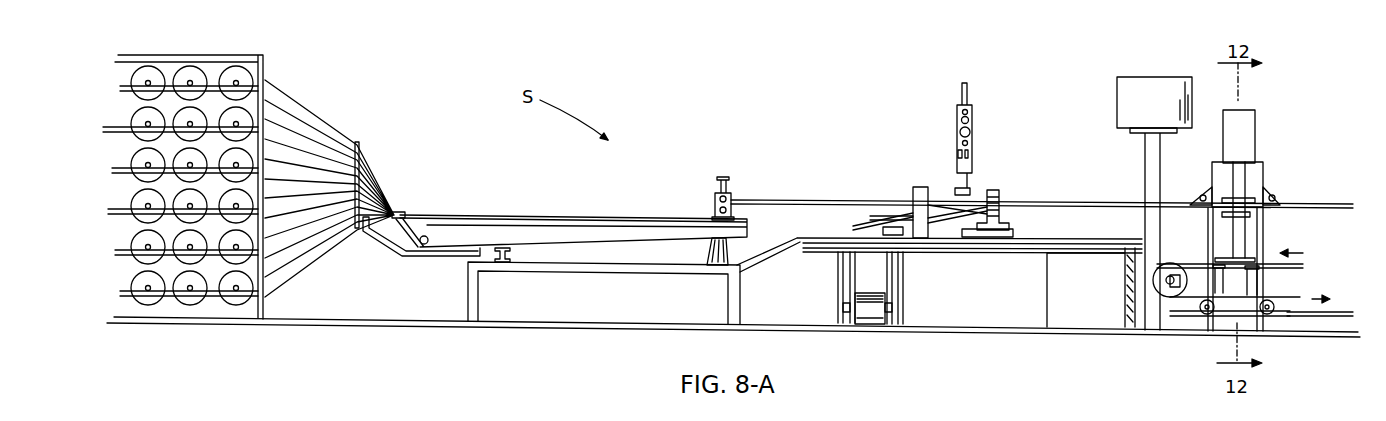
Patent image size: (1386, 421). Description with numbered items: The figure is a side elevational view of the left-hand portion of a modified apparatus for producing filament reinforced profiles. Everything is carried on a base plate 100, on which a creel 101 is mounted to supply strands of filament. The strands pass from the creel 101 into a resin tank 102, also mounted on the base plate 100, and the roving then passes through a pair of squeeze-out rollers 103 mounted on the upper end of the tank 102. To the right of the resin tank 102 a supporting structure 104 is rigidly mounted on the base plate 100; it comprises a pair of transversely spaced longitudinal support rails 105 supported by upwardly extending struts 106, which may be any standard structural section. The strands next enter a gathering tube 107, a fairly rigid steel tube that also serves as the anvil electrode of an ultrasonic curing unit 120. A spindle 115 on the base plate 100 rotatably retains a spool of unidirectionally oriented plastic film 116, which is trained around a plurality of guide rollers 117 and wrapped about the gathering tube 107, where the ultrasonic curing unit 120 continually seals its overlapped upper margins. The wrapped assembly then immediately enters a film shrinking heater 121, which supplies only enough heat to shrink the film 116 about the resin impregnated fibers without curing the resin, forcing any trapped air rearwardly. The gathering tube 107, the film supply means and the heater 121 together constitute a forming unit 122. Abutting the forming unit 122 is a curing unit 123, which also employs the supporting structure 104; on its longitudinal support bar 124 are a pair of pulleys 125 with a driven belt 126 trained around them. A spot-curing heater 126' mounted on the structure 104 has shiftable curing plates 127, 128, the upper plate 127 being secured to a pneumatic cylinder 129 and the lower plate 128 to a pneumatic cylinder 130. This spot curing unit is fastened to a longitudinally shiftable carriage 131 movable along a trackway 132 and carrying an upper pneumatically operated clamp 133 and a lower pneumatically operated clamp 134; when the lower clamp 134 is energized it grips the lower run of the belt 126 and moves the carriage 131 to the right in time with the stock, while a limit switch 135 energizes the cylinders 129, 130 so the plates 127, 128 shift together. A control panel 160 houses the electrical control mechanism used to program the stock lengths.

The base plate 100 is at (640, 326).
The creel 101 is at (254, 80).
The resin tank 102 is at (553, 216).
The squeeze-out rollers 103 is at (731, 195).
The supporting structure 104 is at (924, 253).
The longitudinal support rails 105 is at (1047, 252).
The struts 106 is at (741, 301).
The gathering tube 107 is at (940, 193).
The spindle 115 is at (891, 305).
The plastic film 116 is at (872, 325).
The guide rollers 117 is at (853, 217).
The ultrasonic curing unit 120 is at (972, 131).
The film shrinking heater 121 is at (1000, 193).
The forming unit 122 is at (887, 187).
The curing unit 123 is at (1272, 160).
The longitudinal support bar 124 is at (1150, 282).
The pulleys 125 is at (1157, 269).
The belt 126 is at (1249, 276).
The spot-curing heater 126' is at (1297, 178).
The curing plate 127 is at (1262, 196).
The curing plate 128 is at (1253, 222).
The pneumatic cylinder 129 is at (1230, 181).
The pneumatic cylinder 130 is at (1228, 233).
The carriage 131 is at (1262, 247).
The trackway 132 is at (1326, 318).
The upper pneumatically operated clamp 133 is at (1213, 255).
The lower pneumatically operated clamp 134 is at (1255, 294).
The limit switch 135 is at (1262, 316).
The control panel 160 is at (1125, 77).